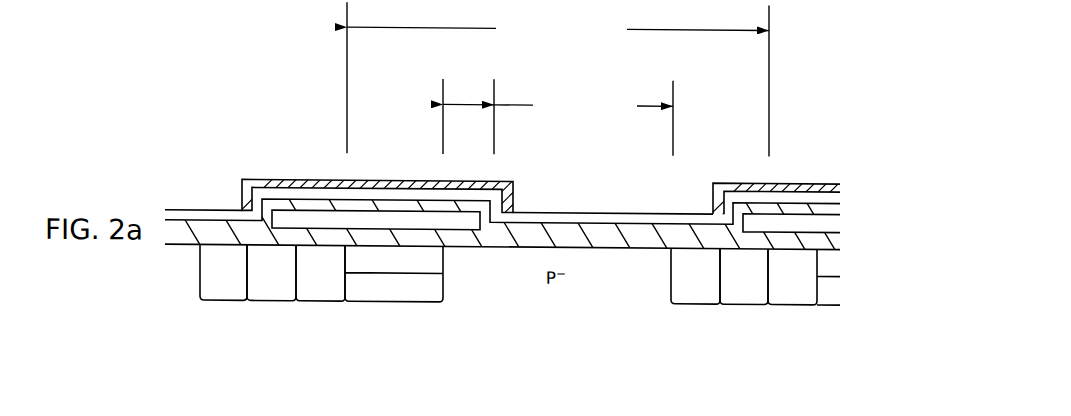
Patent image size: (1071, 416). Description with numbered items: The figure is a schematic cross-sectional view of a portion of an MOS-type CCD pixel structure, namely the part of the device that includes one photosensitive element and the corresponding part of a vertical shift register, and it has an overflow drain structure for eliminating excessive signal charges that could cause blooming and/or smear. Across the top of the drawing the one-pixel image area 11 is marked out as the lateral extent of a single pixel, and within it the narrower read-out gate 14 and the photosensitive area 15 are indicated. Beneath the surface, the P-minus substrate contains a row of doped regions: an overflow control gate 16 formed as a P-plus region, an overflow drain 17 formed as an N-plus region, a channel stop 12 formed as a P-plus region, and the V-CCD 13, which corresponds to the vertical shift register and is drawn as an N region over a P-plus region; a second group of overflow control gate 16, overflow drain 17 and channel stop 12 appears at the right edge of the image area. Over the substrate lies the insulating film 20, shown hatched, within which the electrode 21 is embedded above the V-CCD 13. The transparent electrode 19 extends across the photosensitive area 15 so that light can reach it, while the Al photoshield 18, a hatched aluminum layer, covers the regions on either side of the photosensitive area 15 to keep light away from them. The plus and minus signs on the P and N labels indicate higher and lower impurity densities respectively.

The one-pixel image area 11 is at (558, 79).
The channel stop 12 is at (330, 284).
The V-CCD 13 is at (345, 303).
The read-out gate 14 is at (468, 115).
The photosensitive area 15 is at (583, 116).
The overflow control gate 16 is at (247, 303).
The overflow drain 17 is at (247, 303).
The Al photoshield 18 is at (246, 179).
The transparent electrode 19 is at (568, 220).
The insulating film 20 is at (635, 228).
The electrode 21 is at (298, 216).